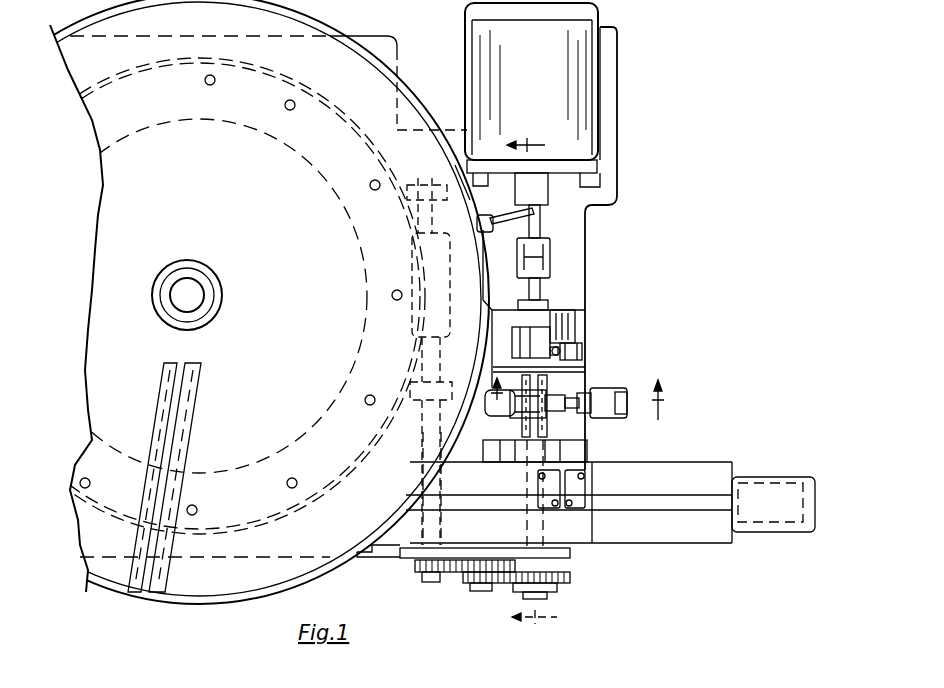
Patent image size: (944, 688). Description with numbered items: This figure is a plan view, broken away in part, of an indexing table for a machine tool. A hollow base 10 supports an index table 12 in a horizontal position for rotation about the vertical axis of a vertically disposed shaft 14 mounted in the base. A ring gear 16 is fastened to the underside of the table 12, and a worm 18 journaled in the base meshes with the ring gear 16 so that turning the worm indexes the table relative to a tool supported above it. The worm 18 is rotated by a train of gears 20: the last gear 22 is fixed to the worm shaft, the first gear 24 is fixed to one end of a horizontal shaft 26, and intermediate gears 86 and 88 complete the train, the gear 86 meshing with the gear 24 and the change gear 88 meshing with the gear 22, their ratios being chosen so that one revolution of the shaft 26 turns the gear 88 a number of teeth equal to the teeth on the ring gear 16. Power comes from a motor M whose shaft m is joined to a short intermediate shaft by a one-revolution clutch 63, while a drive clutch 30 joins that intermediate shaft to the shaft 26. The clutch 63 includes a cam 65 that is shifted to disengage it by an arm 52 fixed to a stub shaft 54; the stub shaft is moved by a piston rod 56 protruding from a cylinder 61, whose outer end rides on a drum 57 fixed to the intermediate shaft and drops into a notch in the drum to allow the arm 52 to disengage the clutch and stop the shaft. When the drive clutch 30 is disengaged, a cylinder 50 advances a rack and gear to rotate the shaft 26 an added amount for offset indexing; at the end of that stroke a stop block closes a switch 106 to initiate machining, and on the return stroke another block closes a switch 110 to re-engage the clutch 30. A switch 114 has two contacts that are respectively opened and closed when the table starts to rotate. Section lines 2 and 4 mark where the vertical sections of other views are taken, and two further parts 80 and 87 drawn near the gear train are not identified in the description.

The hollow base 10 is at (393, 42).
The index table 12 is at (120, 190).
The shaft 14 is at (182, 300).
The ring gear 16 is at (268, 512).
The worm 18 is at (400, 270).
The motor M is at (536, 76).
The motor shaft m is at (540, 287).
The switch 114 is at (548, 222).
The one-revolution clutch 63 is at (548, 318).
The arm 52 is at (565, 347).
The stub shaft 54 is at (585, 355).
The clutch cam 65 is at (512, 352).
The drum 57 is at (494, 376).
The piston rod 56 is at (600, 390).
The cylinder 61 is at (625, 400).
The drive clutch 30 is at (570, 418).
The switch 106 is at (592, 492).
The switch 110 is at (540, 488).
The cylinder 50 is at (775, 480).
The plate 80 is at (572, 556).
The last gear 22 is at (418, 570).
The change gear 88 is at (462, 574).
The intermediate gear 86 is at (462, 578).
The train of gears 20 is at (487, 580).
The shaft 87 is at (492, 592).
The first gear 24 is at (560, 588).
The shaft 26 is at (548, 596).
The section line 2 is at (576, 410).
The section line 4 is at (541, 382).